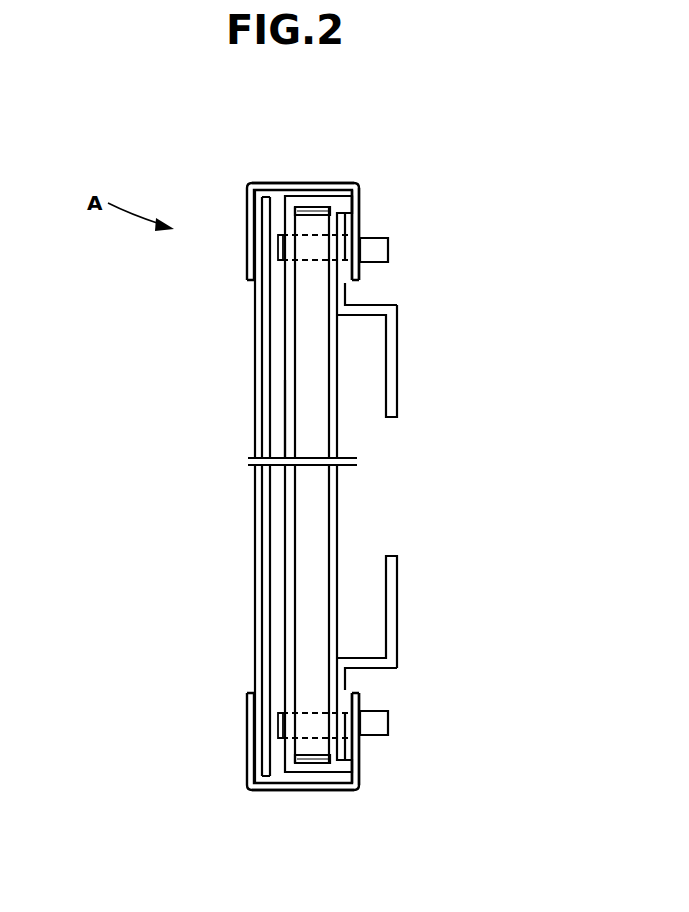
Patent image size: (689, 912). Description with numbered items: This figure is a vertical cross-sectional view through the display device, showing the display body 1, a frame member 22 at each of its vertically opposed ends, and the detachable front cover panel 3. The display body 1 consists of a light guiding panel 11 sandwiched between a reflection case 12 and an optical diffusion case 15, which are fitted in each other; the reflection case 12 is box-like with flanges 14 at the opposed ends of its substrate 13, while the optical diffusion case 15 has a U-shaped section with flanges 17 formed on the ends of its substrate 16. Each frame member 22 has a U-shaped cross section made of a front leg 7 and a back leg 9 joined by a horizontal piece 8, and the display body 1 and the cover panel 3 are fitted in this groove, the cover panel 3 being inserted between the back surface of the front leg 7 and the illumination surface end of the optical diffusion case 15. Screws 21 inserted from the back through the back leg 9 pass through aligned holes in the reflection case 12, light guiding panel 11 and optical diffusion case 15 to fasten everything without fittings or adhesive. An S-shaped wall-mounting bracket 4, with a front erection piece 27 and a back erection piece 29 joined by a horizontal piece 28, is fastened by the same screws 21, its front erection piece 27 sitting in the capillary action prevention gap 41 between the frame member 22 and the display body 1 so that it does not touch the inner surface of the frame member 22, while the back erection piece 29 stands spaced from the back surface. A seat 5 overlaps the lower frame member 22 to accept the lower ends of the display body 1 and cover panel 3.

The display body 1 is at (343, 547).
The front cover panel 3 is at (267, 622).
The wall-mounting bracket 4 is at (430, 486).
The seat 5 is at (343, 772).
The front leg 7 is at (245, 207).
The horizontal piece 8 is at (282, 183).
The back leg 9 is at (360, 222).
The light guiding panel 11 is at (315, 495).
The reflection case 12 is at (379, 484).
The substrate 13 is at (336, 433).
The flange 14 is at (320, 208).
The optical diffusion case 15 is at (227, 399).
The substrate 16 is at (293, 415).
The flange 17 is at (305, 205).
The screw 21 is at (388, 248).
The frame member 22 is at (245, 481).
The front erection piece 27 is at (342, 283).
The horizontal piece 28 is at (374, 308).
The back erection piece 29 is at (392, 368).
The capillary action prevention gap 41 is at (342, 203).